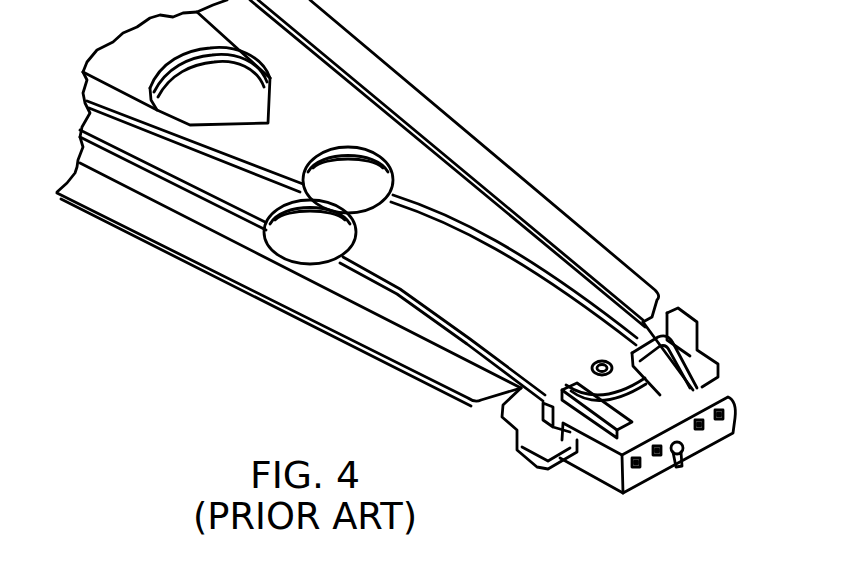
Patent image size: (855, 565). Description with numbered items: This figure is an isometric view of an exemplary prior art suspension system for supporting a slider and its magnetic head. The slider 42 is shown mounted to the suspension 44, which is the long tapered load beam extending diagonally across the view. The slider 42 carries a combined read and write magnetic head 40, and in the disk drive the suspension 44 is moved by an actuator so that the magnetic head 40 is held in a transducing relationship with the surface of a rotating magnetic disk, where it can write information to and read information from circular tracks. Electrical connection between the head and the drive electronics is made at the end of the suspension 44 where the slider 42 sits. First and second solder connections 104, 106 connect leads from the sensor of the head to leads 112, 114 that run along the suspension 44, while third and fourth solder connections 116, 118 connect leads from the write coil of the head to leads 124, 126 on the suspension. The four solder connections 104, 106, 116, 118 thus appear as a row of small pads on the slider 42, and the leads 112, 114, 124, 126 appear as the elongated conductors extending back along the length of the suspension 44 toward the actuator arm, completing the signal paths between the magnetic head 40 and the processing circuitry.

The suspension 44 is at (503, 157).
The lead 114 is at (566, 276).
The lead 124 is at (407, 291).
The lead 126 is at (478, 237).
The lead 112 is at (392, 288).
The slider 42 is at (568, 478).
The magnetic head 40 is at (683, 470).
The first solder connection 104 is at (623, 485).
The second solder connection 106 is at (722, 413).
The third solder connection 116 is at (656, 457).
The fourth solder connection 118 is at (701, 429).